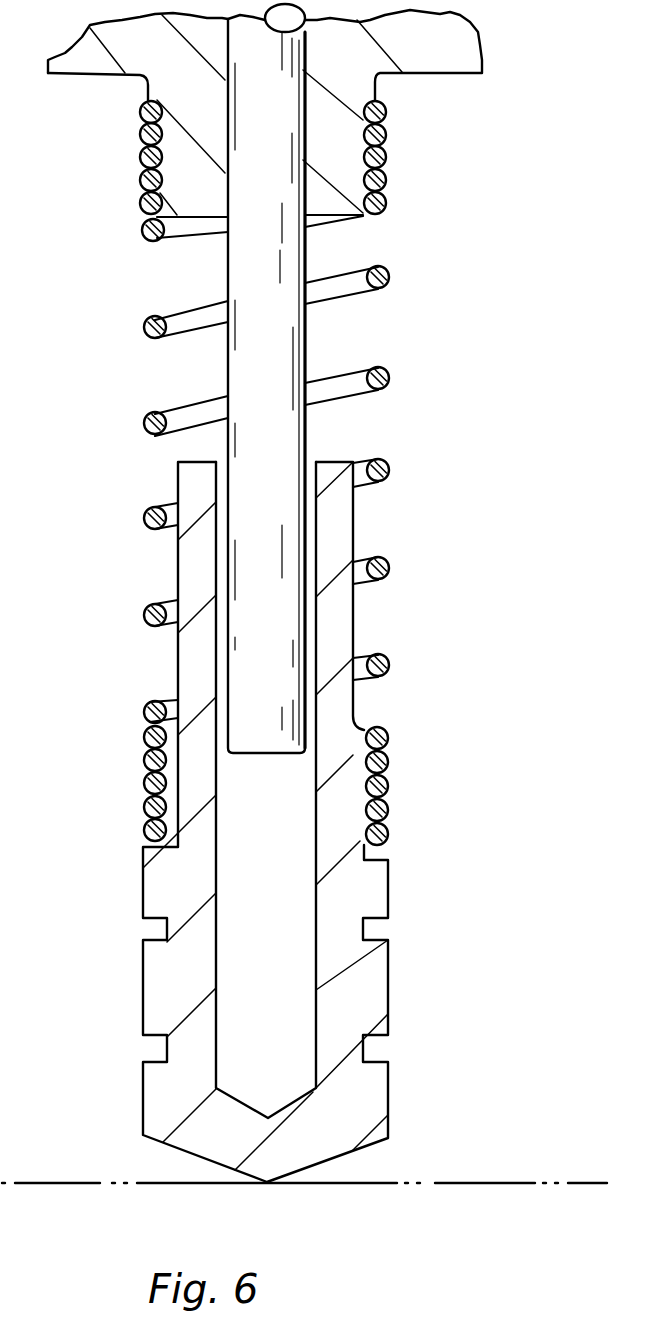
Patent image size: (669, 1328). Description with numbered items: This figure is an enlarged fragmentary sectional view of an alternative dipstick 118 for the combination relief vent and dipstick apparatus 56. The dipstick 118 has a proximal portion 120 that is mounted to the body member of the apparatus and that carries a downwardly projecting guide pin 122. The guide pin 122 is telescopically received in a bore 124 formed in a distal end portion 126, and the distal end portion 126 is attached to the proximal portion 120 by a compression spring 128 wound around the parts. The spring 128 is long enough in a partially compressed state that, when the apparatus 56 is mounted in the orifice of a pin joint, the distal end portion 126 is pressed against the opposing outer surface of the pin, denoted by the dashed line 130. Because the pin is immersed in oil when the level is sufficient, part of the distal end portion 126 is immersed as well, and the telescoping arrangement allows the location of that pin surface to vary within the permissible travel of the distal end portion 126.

The apparatus 56 is at (500, 923).
The dipstick 118 is at (389, 986).
The proximal portion 120 is at (482, 68).
The guide pin 122 is at (306, 326).
The bore 124 is at (253, 890).
The distal end portion 126 is at (389, 1090).
The compression spring 128 is at (389, 380).
The dashed line 130 is at (585, 1183).